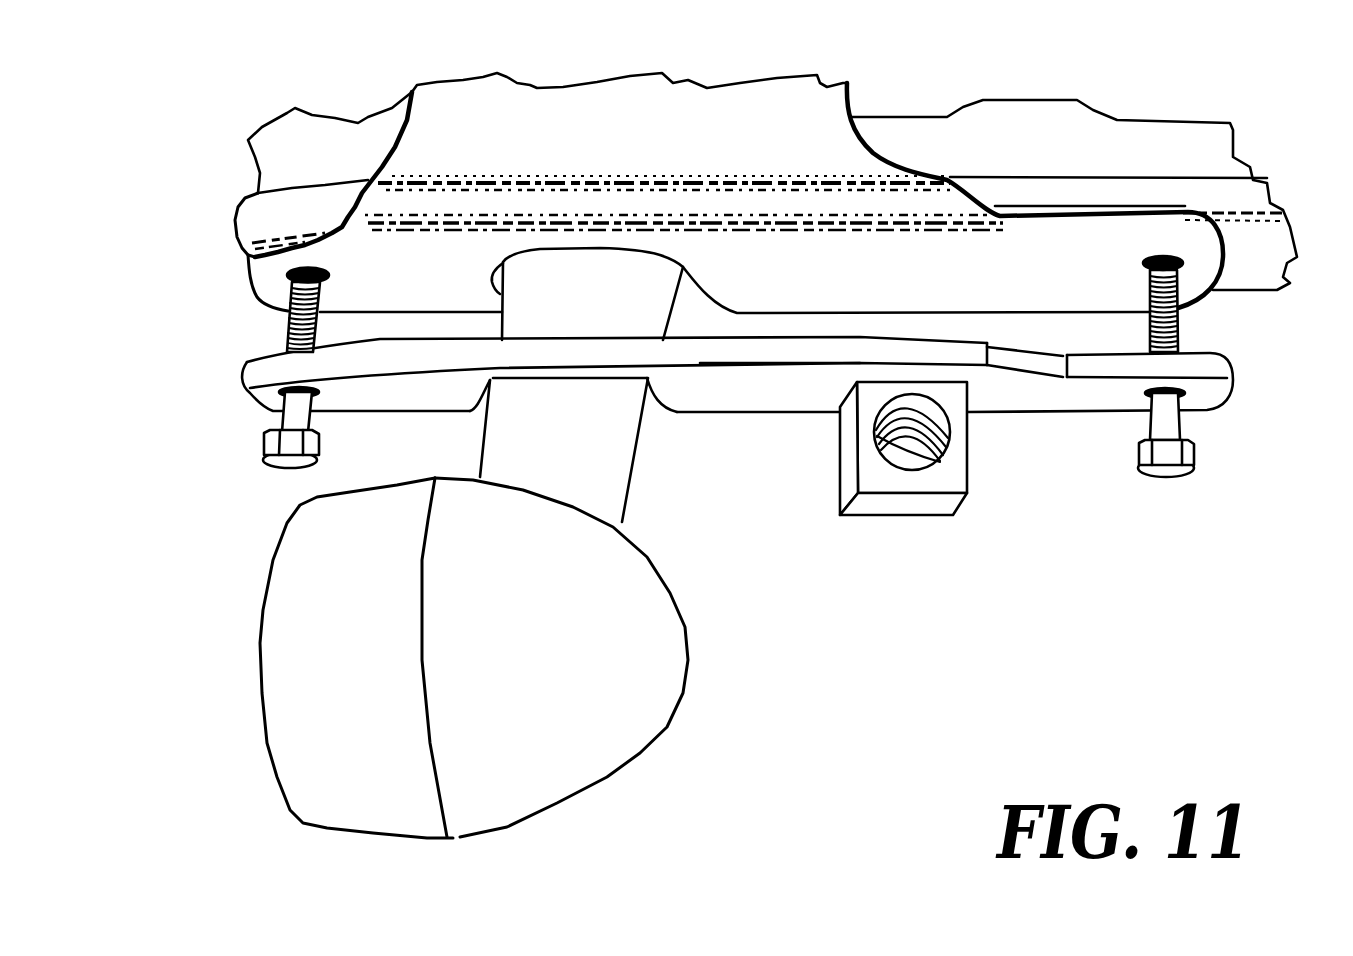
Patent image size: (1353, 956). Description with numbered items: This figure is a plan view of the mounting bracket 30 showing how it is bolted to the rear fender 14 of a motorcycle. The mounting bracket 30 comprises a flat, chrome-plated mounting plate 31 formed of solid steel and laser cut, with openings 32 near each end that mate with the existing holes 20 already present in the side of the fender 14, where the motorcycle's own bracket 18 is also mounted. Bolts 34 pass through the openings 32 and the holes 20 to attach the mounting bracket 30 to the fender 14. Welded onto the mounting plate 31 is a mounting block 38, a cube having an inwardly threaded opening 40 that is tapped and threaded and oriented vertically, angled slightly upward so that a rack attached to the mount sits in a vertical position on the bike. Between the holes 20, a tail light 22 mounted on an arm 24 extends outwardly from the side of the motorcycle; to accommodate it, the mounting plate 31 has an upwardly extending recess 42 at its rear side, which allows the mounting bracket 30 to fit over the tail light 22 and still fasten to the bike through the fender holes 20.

The rear fender 14 is at (973, 150).
The bracket 18 is at (1103, 188).
The holes 20 is at (281, 287).
The tail light 22 is at (603, 730).
The arm 24 is at (603, 492).
The mounting bracket 30 is at (1049, 445).
The mounting plate 31 is at (807, 392).
The openings 32 is at (272, 398).
The bolts 34 is at (273, 457).
The mounting block 38 is at (882, 503).
The threaded opening 40 is at (928, 461).
The recess 42 is at (658, 386).